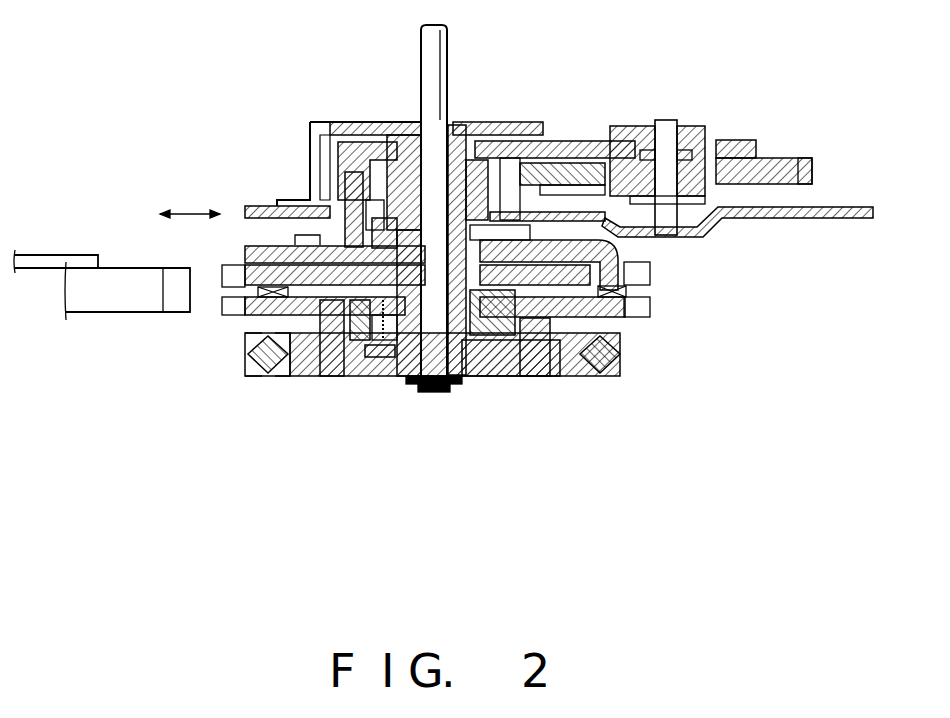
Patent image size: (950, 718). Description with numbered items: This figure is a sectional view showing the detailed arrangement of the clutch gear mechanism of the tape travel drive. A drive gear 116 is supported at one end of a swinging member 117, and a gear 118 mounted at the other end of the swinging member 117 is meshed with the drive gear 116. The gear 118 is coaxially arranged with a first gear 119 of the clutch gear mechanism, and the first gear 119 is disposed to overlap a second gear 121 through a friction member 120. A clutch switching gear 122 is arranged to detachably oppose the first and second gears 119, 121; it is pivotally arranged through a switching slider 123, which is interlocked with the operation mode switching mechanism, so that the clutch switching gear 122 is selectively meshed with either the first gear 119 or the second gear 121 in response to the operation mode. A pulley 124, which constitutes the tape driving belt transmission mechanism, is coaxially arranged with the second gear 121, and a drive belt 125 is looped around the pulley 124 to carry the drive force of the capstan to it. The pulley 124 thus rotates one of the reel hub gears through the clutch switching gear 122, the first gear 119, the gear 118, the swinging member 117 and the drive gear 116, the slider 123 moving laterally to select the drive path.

The drive gear 116 is at (830, 167).
The swinging member 117 is at (566, 145).
The gear 118 is at (345, 185).
The first gear 119 is at (650, 272).
The friction member 120 is at (626, 290).
The second gear 121 is at (648, 306).
The clutch switching gear 122 is at (134, 266).
The switching slider 123 is at (43, 253).
The pulley 124 is at (262, 372).
The drive belt 125 is at (245, 350).